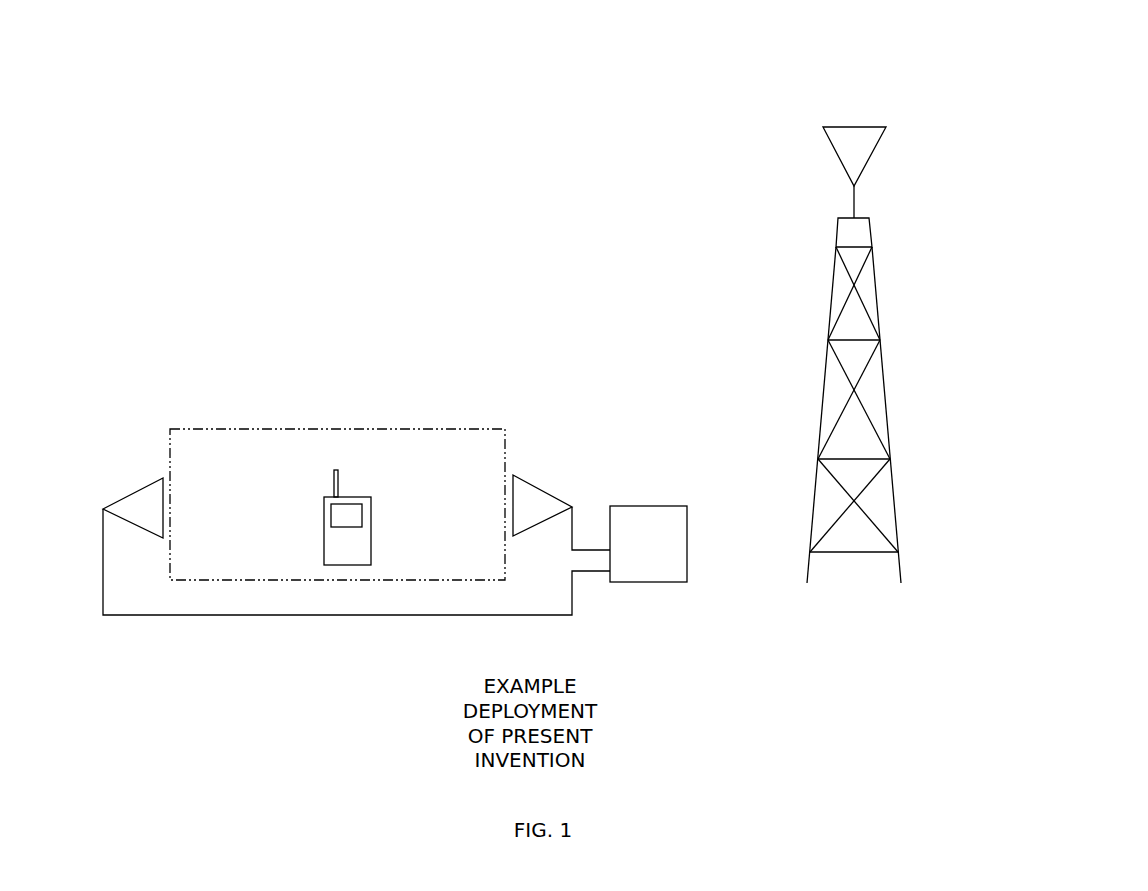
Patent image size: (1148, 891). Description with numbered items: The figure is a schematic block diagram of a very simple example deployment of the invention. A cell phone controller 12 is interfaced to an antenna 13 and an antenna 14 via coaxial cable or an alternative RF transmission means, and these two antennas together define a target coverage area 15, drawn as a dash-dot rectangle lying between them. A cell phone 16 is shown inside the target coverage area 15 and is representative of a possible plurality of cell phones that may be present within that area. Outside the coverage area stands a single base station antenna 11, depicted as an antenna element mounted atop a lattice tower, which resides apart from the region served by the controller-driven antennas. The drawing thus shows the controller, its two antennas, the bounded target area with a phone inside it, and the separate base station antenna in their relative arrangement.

The base station antenna 11 is at (832, 143).
The cell phone controller 12 is at (687, 570).
The antenna 13 is at (532, 477).
The antenna 14 is at (148, 487).
The target coverage area 15 is at (262, 429).
The cell phone 16 is at (323, 508).